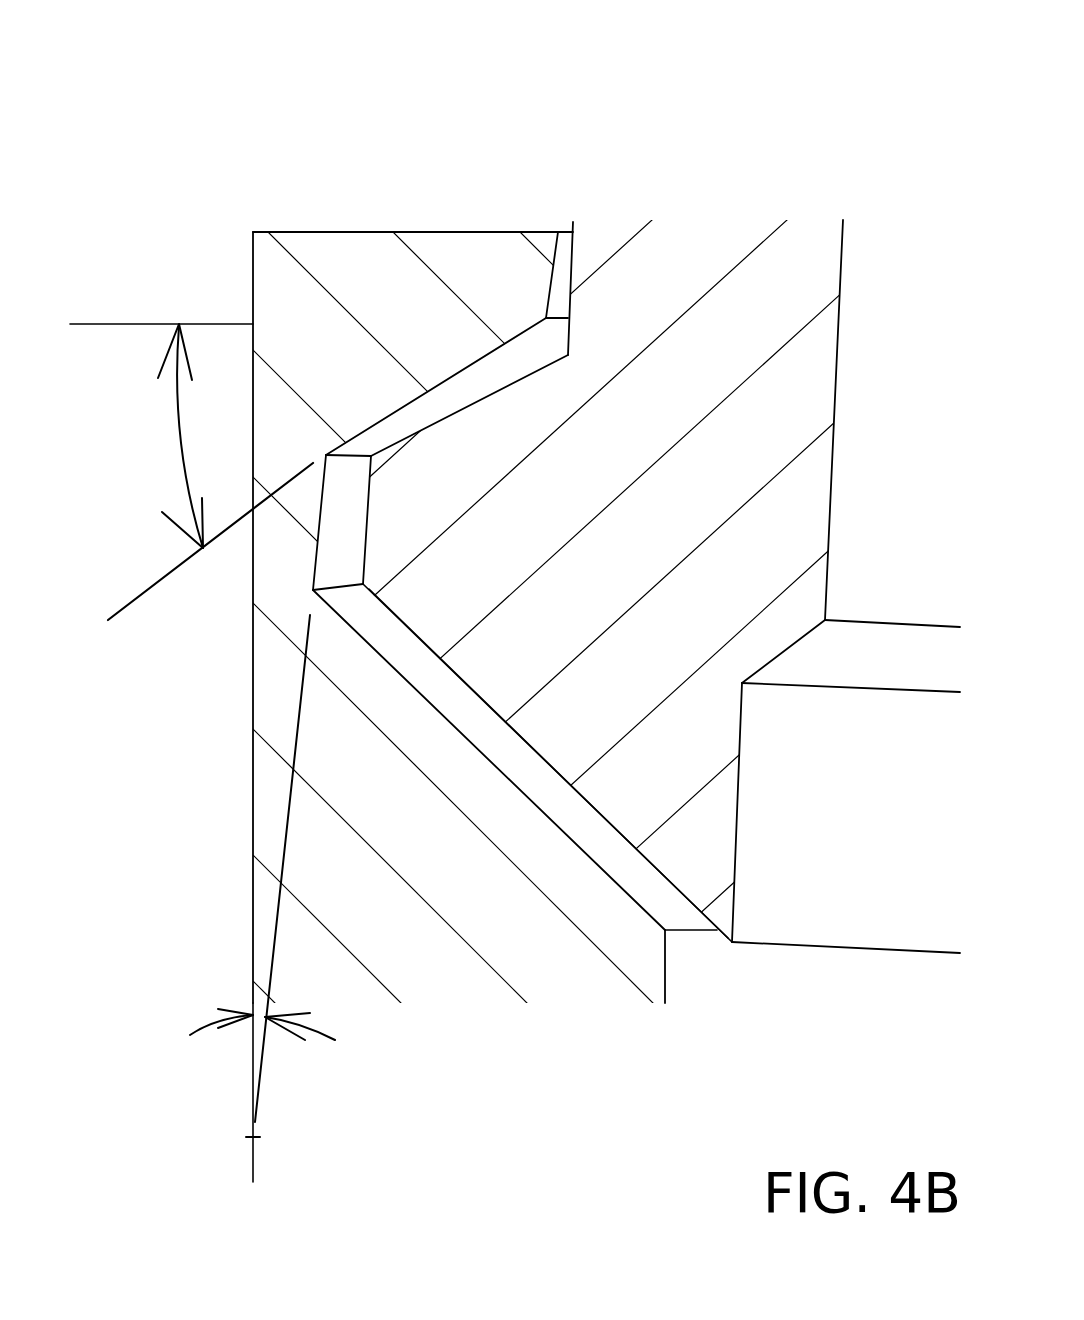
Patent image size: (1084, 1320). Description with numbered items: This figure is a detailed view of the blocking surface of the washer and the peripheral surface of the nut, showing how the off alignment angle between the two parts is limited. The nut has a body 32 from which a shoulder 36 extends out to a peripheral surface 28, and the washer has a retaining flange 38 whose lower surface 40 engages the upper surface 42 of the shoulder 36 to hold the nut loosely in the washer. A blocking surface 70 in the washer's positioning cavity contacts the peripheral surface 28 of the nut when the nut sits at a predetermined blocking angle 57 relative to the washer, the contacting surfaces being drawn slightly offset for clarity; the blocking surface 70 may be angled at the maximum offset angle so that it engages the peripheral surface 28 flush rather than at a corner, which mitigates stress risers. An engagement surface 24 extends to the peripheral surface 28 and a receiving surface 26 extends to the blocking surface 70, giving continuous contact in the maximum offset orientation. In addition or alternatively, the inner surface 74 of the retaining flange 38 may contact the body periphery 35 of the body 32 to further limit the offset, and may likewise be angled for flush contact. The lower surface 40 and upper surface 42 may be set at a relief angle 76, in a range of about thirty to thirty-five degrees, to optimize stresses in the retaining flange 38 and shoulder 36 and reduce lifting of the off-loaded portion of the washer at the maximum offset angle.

The engagement surface 24 is at (600, 813).
The receiving surface 26 is at (598, 863).
The peripheral surface 28 is at (372, 508).
The body 32 is at (663, 270).
The body periphery 35 is at (572, 335).
The shoulder 36 is at (432, 597).
The retaining flange 38 is at (331, 355).
The lower surface 40 is at (463, 357).
The upper surface 42 is at (472, 396).
The predetermined blocking angle 57 is at (317, 1035).
The blocking surface 70 is at (317, 557).
The inner surface 74 is at (547, 280).
The relief angle 76 is at (173, 410).